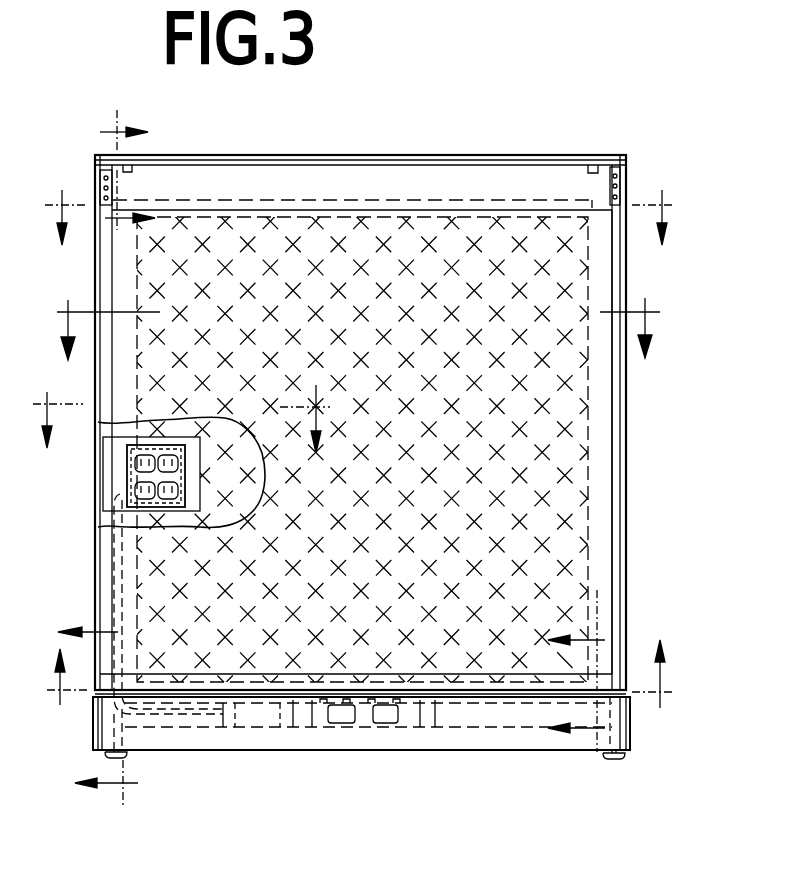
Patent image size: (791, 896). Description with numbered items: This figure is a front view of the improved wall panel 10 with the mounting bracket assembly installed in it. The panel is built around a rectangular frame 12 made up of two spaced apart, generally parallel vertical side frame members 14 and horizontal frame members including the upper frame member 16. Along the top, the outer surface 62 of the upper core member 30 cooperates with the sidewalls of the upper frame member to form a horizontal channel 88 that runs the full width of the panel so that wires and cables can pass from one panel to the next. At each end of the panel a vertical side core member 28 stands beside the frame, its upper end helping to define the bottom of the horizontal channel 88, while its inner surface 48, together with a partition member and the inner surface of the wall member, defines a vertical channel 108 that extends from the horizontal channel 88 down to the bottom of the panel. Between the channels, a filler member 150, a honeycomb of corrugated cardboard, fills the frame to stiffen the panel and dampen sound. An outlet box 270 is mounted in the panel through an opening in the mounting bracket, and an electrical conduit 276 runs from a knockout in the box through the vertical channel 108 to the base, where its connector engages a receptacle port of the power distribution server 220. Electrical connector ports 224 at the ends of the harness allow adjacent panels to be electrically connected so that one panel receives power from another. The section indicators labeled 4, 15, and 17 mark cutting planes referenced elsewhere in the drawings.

The vertical side core member 28 is at (95, 155).
The horizontal channel 88 is at (385, 182).
The outer surface of the upper core member 62 is at (463, 198).
The upper core member 30 is at (492, 210).
The vertical channel 108 is at (125, 369).
The inner surface of the vertical core member 48 is at (102, 410).
The filler member 150 is at (560, 535).
The outlet box 270 is at (172, 450).
The conduit 276 is at (113, 557).
The power distribution server 220 is at (410, 738).
The electrical connector ports 224 is at (92, 723).
The upper frame member 16 is at (120, 179).
The section line 17- 17 is at (366, 209).
The wall panel 10 is at (362, 321).
The section line 4- 4 is at (177, 411).
The section line 15- 15 is at (111, 710).
The vertical side frame members 14 is at (585, 672).
The rectangular frame 12 is at (363, 684).